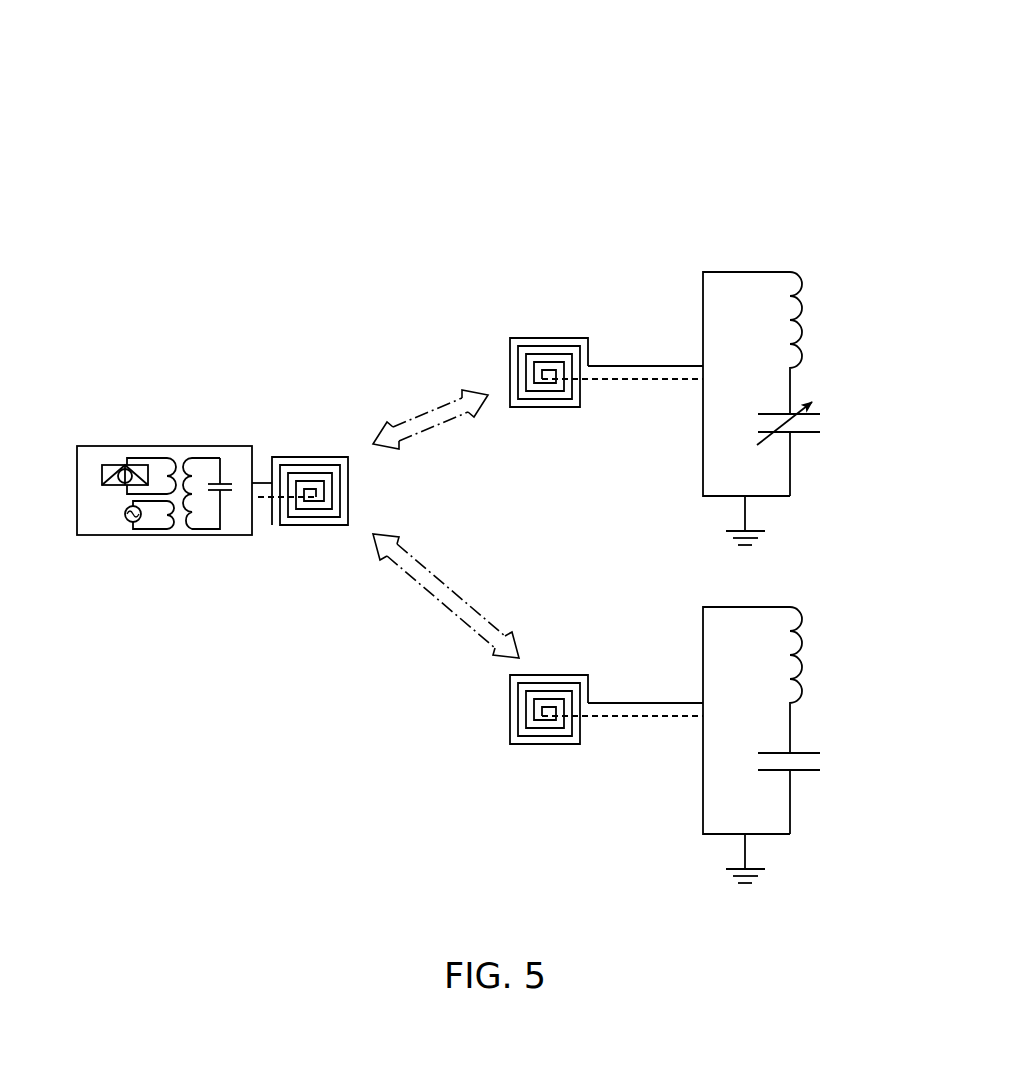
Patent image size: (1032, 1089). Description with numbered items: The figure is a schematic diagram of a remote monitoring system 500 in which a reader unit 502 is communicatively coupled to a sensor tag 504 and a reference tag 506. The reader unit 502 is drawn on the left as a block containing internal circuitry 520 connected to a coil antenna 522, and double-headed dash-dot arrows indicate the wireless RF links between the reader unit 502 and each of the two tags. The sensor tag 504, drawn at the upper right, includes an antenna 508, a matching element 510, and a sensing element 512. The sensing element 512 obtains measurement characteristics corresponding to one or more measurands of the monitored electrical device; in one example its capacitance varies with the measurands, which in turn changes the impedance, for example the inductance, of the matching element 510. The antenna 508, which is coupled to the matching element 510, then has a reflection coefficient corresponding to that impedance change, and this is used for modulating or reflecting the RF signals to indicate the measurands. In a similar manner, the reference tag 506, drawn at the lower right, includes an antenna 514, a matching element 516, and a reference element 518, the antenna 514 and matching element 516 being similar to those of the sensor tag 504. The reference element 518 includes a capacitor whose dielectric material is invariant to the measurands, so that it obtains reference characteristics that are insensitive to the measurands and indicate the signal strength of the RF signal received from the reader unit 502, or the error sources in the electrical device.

The remote monitoring system 500 is at (752, 84).
The reader unit 502 is at (124, 405).
The sensor tag 504 is at (608, 280).
The reference tag 506 is at (608, 616).
The antenna 508 is at (549, 338).
The matching element 510 is at (802, 325).
The sensing element 512 is at (803, 433).
The antenna 514 is at (549, 675).
The matching element 516 is at (802, 663).
The reference element 518 is at (803, 771).
The transmit circuitry 520 is at (220, 446).
The transmit coil antenna 522 is at (312, 457).